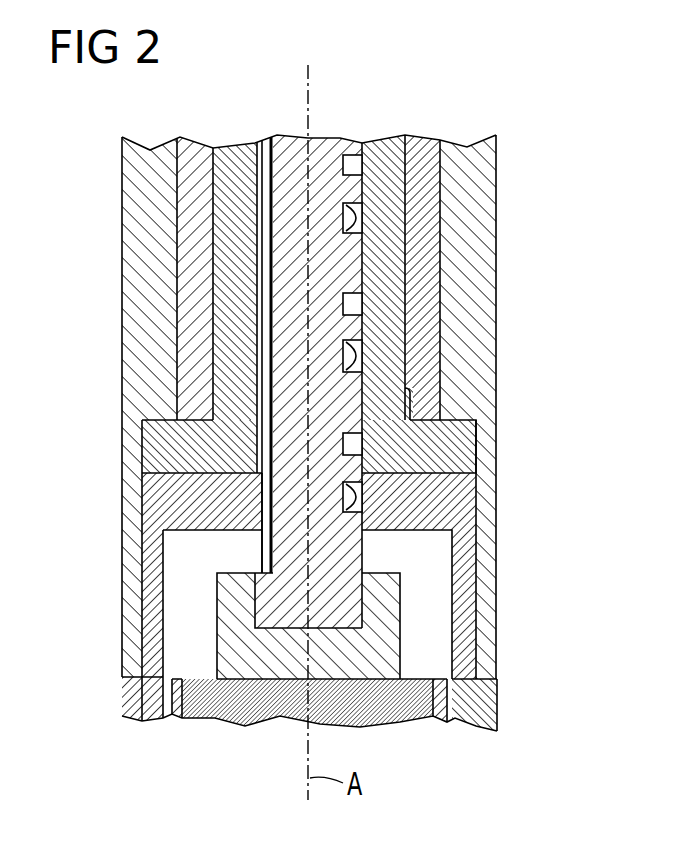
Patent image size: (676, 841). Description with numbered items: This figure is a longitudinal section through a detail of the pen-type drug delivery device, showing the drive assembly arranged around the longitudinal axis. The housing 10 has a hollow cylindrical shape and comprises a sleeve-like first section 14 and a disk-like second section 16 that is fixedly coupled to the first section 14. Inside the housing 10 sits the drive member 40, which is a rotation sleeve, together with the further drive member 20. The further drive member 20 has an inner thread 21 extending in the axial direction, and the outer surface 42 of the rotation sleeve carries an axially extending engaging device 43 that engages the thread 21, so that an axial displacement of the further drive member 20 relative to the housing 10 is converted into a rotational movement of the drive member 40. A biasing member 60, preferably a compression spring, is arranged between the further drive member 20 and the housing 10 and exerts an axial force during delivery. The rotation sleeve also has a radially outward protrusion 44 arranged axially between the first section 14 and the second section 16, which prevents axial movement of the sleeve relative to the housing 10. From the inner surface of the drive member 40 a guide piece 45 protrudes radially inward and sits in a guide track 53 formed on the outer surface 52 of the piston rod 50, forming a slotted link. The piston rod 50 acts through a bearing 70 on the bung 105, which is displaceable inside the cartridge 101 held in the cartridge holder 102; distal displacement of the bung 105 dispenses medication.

The housing 10 is at (487, 238).
The first section 14 is at (480, 405).
The second section 16 is at (497, 503).
The further drive member 20 is at (445, 186).
The inner thread 21 is at (413, 400).
The drive member 40 is at (380, 148).
The outer surface 42 is at (407, 160).
The engaging device 43 is at (203, 262).
The protrusion 44 is at (142, 440).
The guide piece 45 is at (347, 440).
The piston rod 50 is at (350, 610).
The outer surface 52 is at (367, 553).
The guide track 53 is at (353, 155).
The biasing member 60 is at (265, 157).
The bearing 70 is at (382, 657).
The cartridge 101 is at (140, 694).
The cartridge holder 102 is at (485, 702).
The bung 105 is at (408, 730).